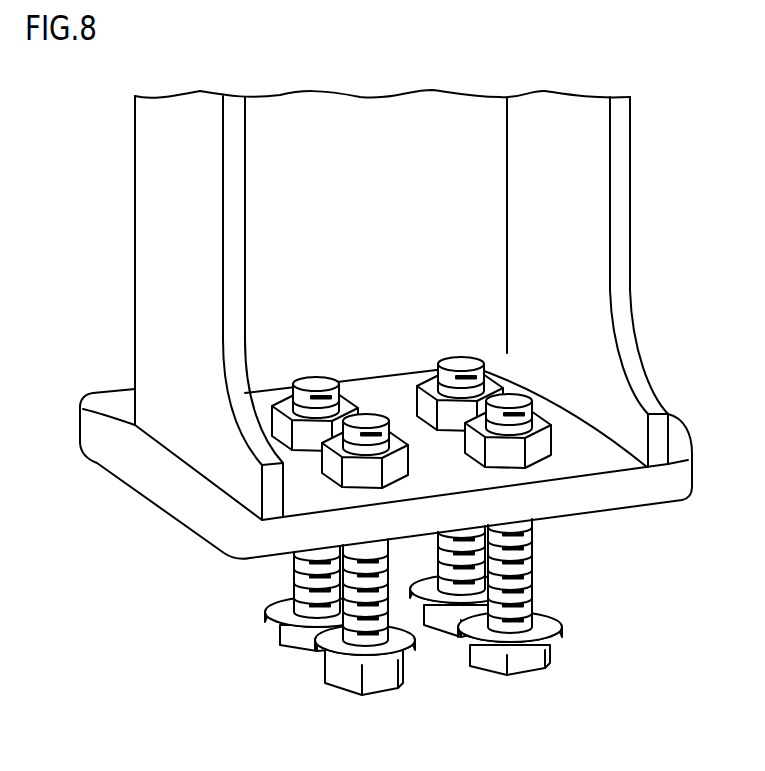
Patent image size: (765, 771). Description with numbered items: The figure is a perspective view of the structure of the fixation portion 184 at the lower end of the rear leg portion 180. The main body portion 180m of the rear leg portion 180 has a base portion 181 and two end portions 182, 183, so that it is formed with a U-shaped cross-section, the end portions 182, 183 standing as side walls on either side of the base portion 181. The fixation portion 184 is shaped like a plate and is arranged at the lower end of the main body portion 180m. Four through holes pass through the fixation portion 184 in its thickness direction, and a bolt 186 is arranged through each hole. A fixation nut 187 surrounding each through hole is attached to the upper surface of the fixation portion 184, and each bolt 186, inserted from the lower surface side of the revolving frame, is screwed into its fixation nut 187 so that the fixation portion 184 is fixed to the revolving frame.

The rear leg portion 180 is at (384, 303).
The main body portion 180m is at (380, 125).
The base portion 181 is at (287, 160).
The end portion 182 is at (572, 215).
The end portion 183 is at (167, 238).
The fixation portion 184 is at (176, 465).
The bolt 186 is at (528, 576).
The fixation nut 187 is at (538, 445).